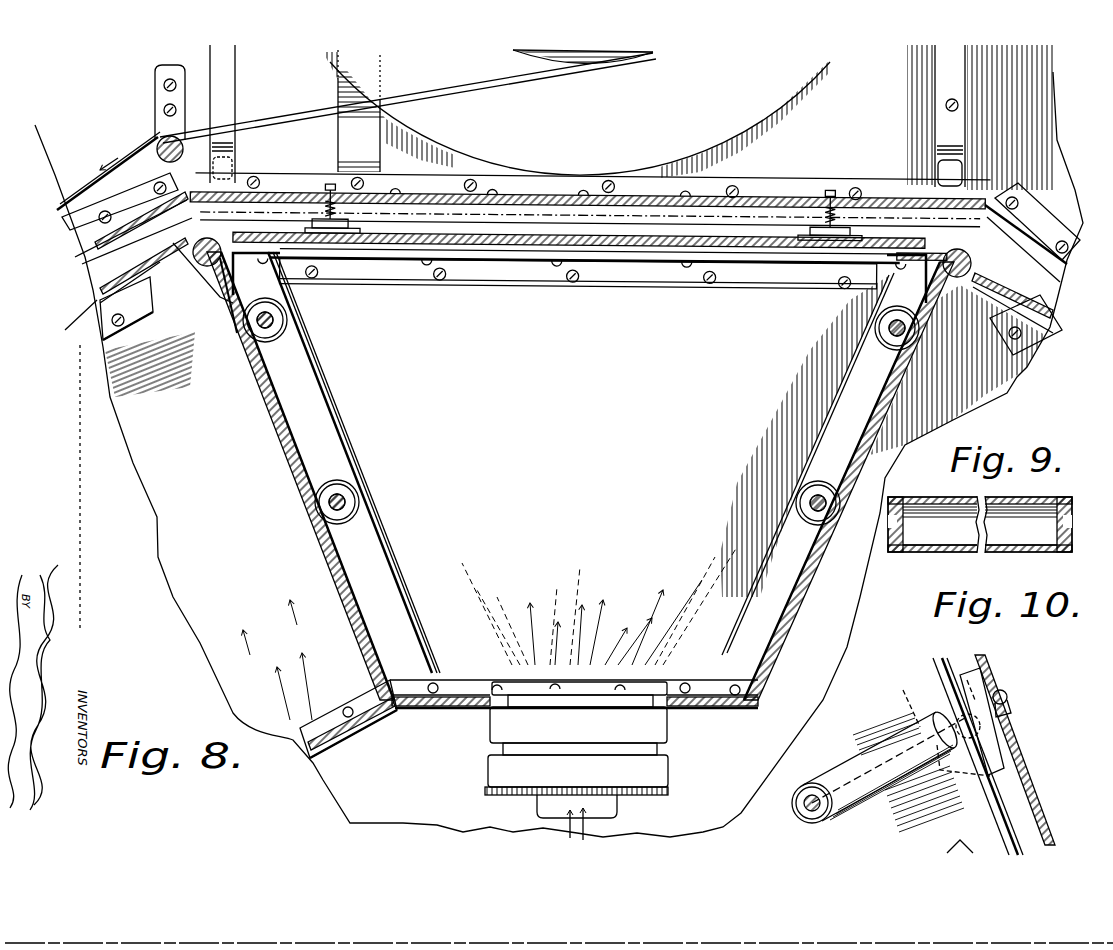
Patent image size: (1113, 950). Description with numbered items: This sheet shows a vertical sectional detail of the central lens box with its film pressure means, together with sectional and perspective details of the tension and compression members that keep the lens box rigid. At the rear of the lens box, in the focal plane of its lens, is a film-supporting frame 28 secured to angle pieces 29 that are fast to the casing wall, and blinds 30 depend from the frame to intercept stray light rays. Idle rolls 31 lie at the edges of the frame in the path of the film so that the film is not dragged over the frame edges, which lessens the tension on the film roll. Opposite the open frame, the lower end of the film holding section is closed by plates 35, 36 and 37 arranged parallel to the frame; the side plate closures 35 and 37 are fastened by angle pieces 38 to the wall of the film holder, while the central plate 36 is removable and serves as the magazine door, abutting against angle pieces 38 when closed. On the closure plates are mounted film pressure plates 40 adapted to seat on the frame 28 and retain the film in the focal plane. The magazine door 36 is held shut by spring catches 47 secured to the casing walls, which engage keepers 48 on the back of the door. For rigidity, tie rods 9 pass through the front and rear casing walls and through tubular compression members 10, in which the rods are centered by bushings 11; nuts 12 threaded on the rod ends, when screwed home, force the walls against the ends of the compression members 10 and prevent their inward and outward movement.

In FIG. 8, the tie rod 9 is at (274, 319).
In FIG. 10, the tie rod 9 is at (805, 808).
In FIG. 8, the tubular compression member 10 is at (285, 336).
In FIG. 9, the tubular compression member 10 is at (947, 547).
In FIG. 10, the tubular compression member 10 is at (827, 780).
In FIG. 9, the bushing 11 is at (897, 547).
In FIG. 10, the nut 12 is at (1014, 712).
In FIG. 8, the film-supporting frame 28 is at (238, 262).
In FIG. 8, the angle piece 29 is at (672, 273).
In FIG. 8, the blind 30 is at (236, 273).
In FIG. 8, the idle roll 31 is at (210, 236).
In FIG. 8, the side plate closure 35 is at (82, 254).
In FIG. 8, the central plate 36 is at (790, 190).
In FIG. 8, the side plate closure 37 is at (1003, 192).
In FIG. 8, the angle piece 38 is at (130, 203).
In FIG. 8, the film pressure plate 40 is at (620, 233).
In FIG. 8, the spring catch 47 is at (230, 110).
In FIG. 8, the keeper 48 is at (233, 181).